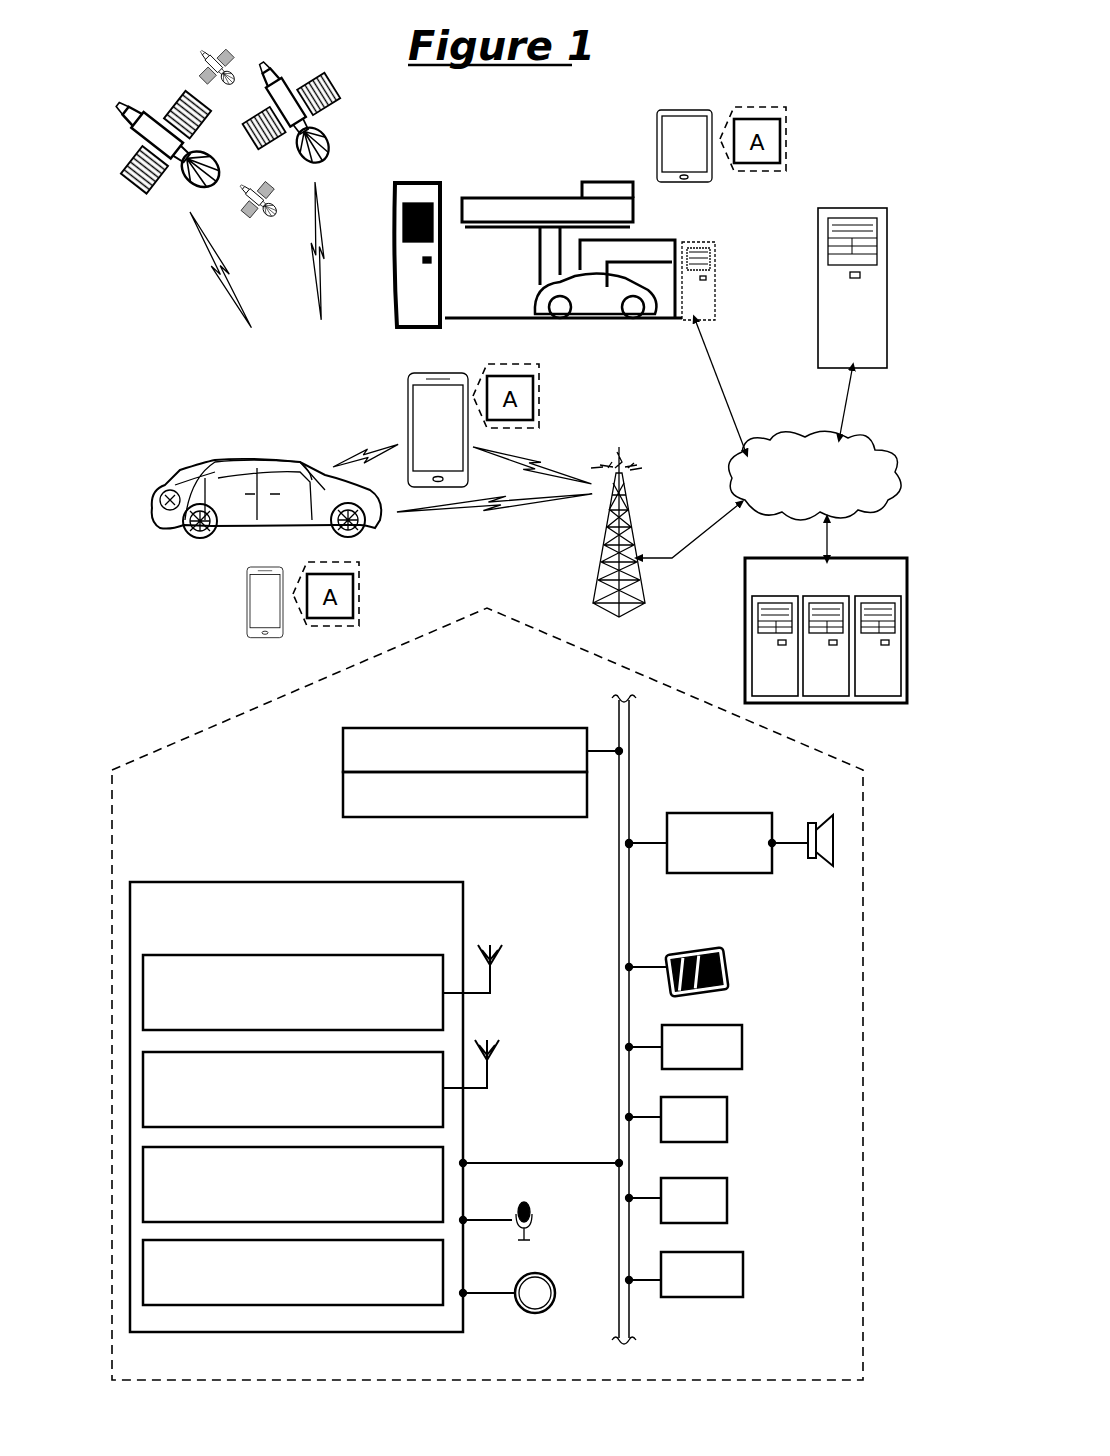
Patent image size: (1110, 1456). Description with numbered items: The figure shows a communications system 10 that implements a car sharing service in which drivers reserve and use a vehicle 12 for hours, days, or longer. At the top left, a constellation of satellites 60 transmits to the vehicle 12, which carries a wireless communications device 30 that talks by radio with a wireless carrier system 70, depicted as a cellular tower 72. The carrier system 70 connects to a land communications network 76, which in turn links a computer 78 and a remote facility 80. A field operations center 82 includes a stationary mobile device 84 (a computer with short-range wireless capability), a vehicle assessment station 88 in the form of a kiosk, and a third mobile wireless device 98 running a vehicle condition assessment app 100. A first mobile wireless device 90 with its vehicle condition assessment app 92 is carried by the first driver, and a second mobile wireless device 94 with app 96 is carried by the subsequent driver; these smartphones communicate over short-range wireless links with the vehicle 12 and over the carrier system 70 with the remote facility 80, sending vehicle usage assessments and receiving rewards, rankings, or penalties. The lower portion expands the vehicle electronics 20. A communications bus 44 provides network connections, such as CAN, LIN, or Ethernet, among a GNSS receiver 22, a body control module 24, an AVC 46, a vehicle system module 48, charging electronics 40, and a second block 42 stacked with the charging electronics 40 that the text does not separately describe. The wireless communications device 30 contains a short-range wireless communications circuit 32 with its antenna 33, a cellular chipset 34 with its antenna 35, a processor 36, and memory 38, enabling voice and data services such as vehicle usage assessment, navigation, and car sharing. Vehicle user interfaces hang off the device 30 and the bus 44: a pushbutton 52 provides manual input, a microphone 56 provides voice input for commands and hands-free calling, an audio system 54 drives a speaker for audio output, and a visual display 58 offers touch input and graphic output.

The communications system 10 is at (722, 32).
The vehicle 12 is at (228, 463).
The vehicle electronics 20 is at (868, 1195).
The GNSS receiver 22 is at (742, 1045).
The body control module 24 is at (727, 1118).
The wireless communications device 30 is at (180, 882).
The short-range wireless communications circuit 32 is at (293, 992).
The antenna 33 is at (490, 980).
The cellular chipset 34 is at (293, 1089).
The antenna 35 is at (487, 1075).
The processor 36 is at (293, 1184).
The memory 38 is at (293, 1272).
The charging electronics 40 is at (343, 748).
The GNSS antenna 42 is at (343, 796).
The communications bus 44 is at (629, 1302).
The AVC 46 is at (727, 1195).
The vehicle system module 48 is at (743, 1272).
The pushbutton 52 is at (556, 1290).
The audio system 54 is at (725, 873).
The microphone 56 is at (536, 1222).
The visual display 58 is at (726, 962).
The constellation of satellites 60 is at (255, 45).
The wireless carrier system 70 is at (604, 532).
The cellular tower 72 is at (628, 503).
The land communications network 76 is at (815, 475).
The computer 78 is at (869, 288).
The remote facility 80 is at (826, 630).
The field operations center 82 is at (618, 210).
The stationary mobile device 84 is at (705, 283).
The vehicle assessment station 88 is at (403, 255).
The first mobile wireless device 90 is at (264, 567).
The vehicle condition assessment app 92 is at (358, 585).
The second mobile wireless device 94 is at (408, 402).
The vehicle condition assessment app 96 is at (540, 390).
The third mobile wireless device 98 is at (703, 100).
The vehicle condition assessment app 100 is at (787, 128).